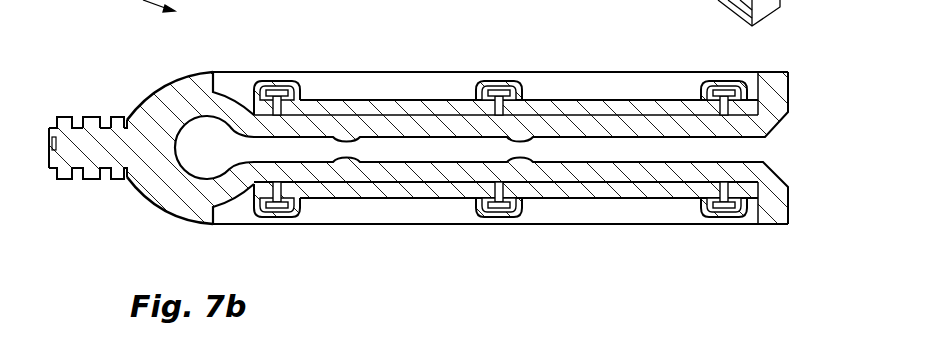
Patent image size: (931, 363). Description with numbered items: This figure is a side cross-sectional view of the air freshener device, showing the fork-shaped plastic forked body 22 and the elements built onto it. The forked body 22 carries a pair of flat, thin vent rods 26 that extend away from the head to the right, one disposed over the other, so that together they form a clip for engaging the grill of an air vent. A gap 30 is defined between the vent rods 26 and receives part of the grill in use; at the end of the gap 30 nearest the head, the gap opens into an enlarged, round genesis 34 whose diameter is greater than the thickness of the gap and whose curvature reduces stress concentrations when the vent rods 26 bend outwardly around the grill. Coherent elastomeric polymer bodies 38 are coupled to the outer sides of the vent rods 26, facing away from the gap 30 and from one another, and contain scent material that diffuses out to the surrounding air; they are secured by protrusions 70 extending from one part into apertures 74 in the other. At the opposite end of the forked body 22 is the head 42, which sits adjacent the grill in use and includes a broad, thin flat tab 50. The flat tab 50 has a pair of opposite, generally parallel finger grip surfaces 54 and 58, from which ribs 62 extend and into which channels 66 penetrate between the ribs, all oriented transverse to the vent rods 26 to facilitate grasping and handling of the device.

The forked body 22 is at (593, 173).
The vent rods 26 is at (663, 127).
The gap 30 is at (747, 153).
The genesis 34 is at (195, 178).
The coherent elastomeric polymer bodies 38 is at (357, 85).
The head 42 is at (148, 110).
The flat tab 50 is at (90, 157).
The finger grip surface 54 is at (52, 125).
The finger grip surface 58 is at (55, 168).
The ribs 62 is at (67, 117).
The channels 66 is at (110, 117).
The protrusions 70 is at (513, 78).
The apertures 74 is at (482, 78).